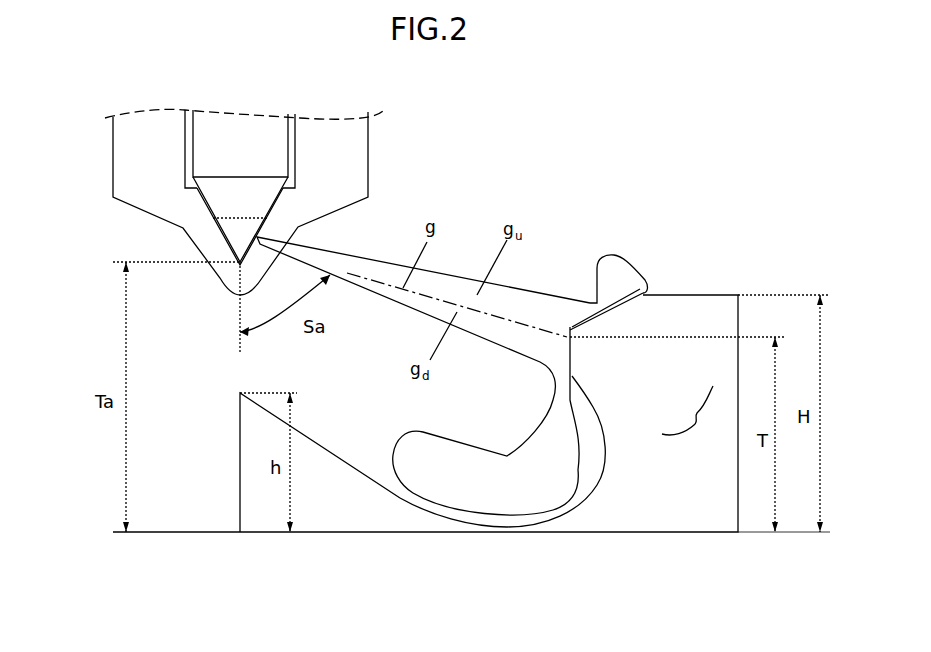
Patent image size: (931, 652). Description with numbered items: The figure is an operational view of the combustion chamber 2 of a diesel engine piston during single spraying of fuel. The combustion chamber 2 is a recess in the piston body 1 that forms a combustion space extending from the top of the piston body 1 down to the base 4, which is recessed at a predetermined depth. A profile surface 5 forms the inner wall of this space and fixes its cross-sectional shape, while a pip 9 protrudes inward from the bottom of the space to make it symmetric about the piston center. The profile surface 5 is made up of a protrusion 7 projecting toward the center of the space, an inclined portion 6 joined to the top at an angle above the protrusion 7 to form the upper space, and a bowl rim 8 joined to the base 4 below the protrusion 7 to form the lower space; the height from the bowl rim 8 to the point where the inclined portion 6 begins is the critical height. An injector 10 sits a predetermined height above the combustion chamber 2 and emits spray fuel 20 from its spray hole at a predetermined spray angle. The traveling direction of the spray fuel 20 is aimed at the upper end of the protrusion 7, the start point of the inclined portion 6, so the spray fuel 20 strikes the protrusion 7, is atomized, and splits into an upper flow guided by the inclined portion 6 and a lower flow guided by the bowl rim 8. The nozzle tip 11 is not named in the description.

The piston body 1 is at (698, 525).
The combustion chamber 2 is at (367, 404).
The base 4 is at (543, 528).
The profile surface 5 is at (687, 415).
The inclined portion 6 is at (622, 305).
The protrusion 7 is at (572, 353).
The bowl rim 8 is at (607, 443).
The pip 9 is at (253, 445).
The injector 10 is at (127, 155).
The nozzle tip 11 is at (285, 250).
The spray fuel 20 is at (373, 262).